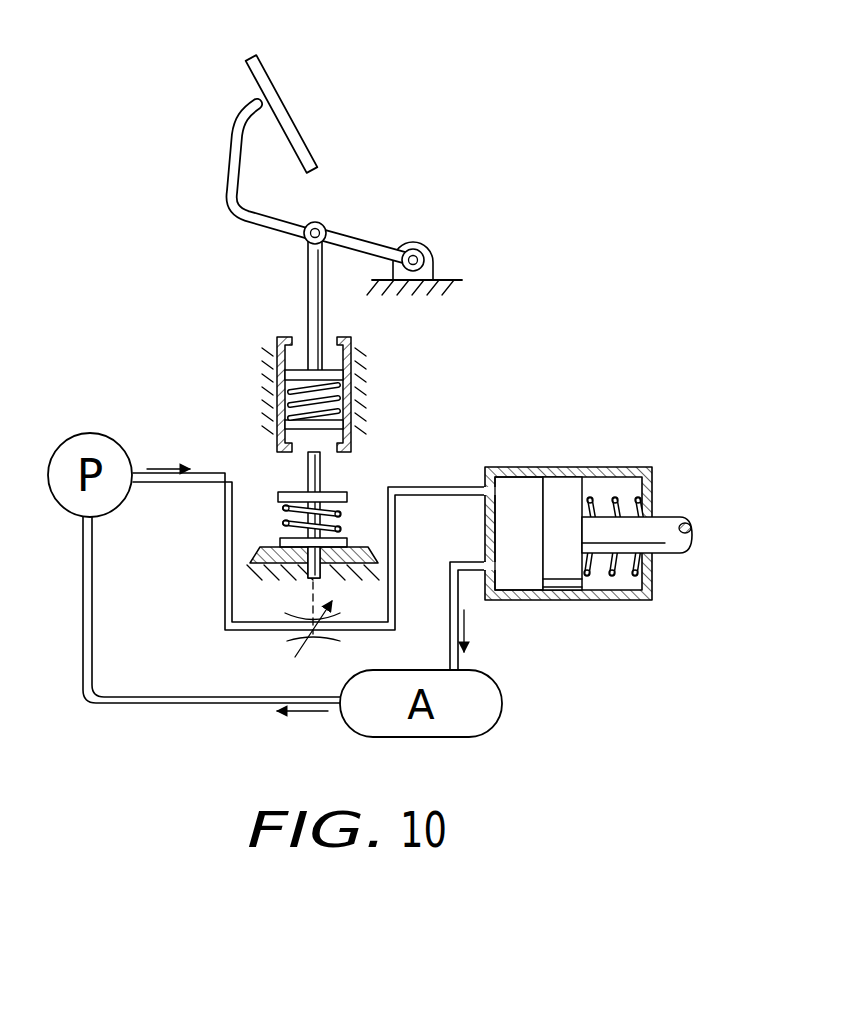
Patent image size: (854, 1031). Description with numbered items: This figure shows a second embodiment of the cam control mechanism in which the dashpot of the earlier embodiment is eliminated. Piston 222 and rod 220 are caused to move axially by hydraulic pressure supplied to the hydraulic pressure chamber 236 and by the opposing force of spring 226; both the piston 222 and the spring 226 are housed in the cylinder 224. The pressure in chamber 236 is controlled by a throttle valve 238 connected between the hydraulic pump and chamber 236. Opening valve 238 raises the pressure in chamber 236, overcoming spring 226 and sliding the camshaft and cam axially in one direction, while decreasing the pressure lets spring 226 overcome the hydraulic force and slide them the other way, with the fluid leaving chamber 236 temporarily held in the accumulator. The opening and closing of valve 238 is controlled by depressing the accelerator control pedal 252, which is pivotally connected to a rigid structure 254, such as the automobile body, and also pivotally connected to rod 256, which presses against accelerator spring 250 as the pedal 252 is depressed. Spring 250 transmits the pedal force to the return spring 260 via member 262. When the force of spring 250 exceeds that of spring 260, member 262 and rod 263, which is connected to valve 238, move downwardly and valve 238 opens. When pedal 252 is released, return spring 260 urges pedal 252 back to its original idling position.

The rod 220 is at (657, 530).
The piston 222 is at (570, 488).
The cylinder housing 224 is at (515, 467).
The spring 226 is at (605, 572).
The hydraulic pressure chamber 236 is at (518, 567).
The throttle valve 238 is at (275, 641).
The accelerator spring 250 is at (345, 397).
The accelerator control pedal 252 is at (290, 112).
The rigid structure 254 is at (448, 280).
The rod 256 is at (307, 298).
The return spring 260 is at (343, 510).
The member 262 is at (308, 482).
The rod 263 is at (310, 535).